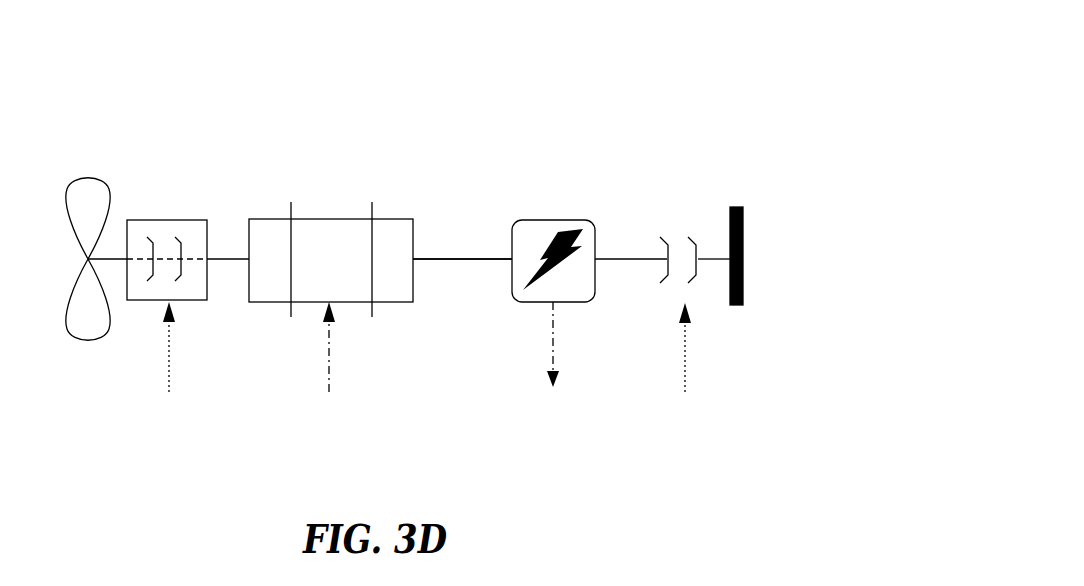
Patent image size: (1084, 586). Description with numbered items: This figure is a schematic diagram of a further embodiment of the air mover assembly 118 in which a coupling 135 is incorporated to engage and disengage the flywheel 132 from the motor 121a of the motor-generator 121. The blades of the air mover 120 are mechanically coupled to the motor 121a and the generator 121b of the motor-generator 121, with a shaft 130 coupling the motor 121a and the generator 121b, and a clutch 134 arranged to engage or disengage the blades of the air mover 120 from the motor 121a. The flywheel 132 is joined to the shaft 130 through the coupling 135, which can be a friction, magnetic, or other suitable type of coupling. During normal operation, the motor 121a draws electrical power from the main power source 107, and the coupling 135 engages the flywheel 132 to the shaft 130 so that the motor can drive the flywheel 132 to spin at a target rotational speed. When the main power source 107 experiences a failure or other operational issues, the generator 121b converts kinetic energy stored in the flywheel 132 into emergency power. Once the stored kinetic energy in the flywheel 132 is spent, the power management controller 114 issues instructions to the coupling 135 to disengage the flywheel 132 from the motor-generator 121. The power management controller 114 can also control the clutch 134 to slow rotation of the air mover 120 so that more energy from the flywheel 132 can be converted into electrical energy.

The air mover assembly 118 is at (676, 103).
The air mover 120 is at (92, 181).
The clutch 134 is at (156, 220).
The motor-generator 121 is at (253, 193).
The motor 121a is at (316, 302).
The generator 121b is at (595, 226).
The shaft 130 is at (430, 260).
The coupling 135 is at (711, 200).
The flywheel 132 is at (743, 305).
The power management controller 114 is at (427, 394).
The main power source 107 is at (328, 394).